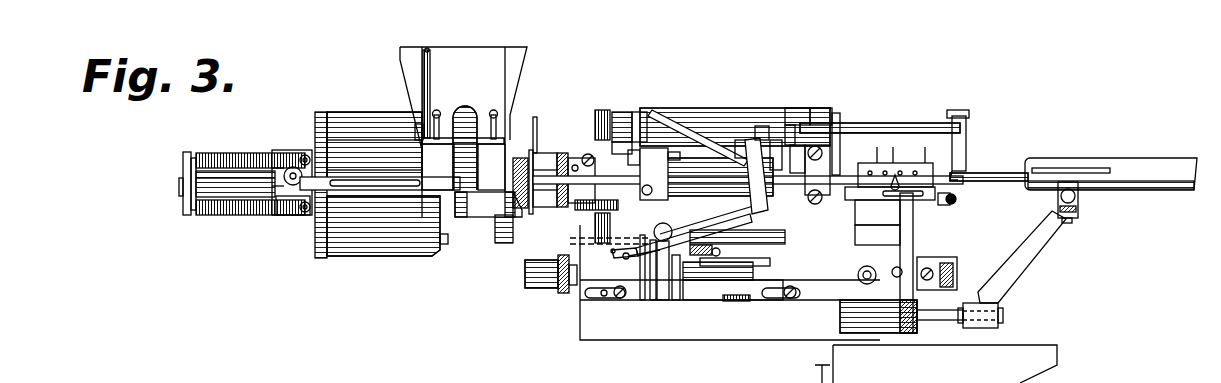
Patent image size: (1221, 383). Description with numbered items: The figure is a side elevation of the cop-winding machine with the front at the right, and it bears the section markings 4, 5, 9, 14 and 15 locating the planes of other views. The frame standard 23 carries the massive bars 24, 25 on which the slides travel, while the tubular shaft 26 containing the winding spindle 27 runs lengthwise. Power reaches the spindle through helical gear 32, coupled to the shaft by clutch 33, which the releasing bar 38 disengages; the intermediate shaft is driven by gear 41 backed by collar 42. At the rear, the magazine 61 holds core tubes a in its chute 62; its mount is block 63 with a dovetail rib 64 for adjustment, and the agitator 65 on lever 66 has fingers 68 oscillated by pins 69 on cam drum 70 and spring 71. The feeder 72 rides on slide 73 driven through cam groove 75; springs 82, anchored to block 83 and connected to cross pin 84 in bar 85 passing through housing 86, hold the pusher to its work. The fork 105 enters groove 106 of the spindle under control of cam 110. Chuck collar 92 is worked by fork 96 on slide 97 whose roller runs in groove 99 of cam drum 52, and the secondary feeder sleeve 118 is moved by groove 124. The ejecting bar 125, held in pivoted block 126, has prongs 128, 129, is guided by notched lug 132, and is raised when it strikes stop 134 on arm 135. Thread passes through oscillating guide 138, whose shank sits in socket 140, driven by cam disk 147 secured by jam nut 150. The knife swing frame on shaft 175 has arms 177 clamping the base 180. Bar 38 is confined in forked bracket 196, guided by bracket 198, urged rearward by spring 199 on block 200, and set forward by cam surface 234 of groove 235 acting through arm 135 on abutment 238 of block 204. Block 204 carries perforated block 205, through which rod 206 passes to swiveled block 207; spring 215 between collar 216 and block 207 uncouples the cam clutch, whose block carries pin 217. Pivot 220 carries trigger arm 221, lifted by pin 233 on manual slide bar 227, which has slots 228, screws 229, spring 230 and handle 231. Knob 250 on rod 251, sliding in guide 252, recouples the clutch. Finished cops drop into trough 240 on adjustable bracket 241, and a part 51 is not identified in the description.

The section line 14 is at (292, 268).
The section line 15 is at (192, 186).
The section line 5 is at (553, 150).
The section line 4 is at (702, 260).
The section line 9 is at (908, 345).
The cross pin 84 is at (188, 152).
The bar 85 is at (182, 178).
The springs 82 is at (228, 153).
The housing 86 is at (212, 215).
The block 83 is at (278, 153).
The slide 73 is at (283, 215).
The cam groove 75 is at (322, 258).
The cam drum 70 is at (338, 112).
The rod or bar 24 is at (348, 168).
The feeder 72 is at (376, 183).
The rod or bar 25 is at (382, 206).
The pins 69 is at (443, 245).
The magazine 61 is at (728, 215).
The spring 71 is at (423, 63).
The lever 66 is at (416, 128).
The fingers 68 is at (451, 116).
The agitator 65 is at (498, 138).
The core tubes a is at (457, 182).
The chute 62 is at (492, 167).
The dovetail rib 64 is at (484, 204).
The groove 106 is at (507, 218).
The cam 110 is at (516, 218).
The fork 105 is at (525, 158).
The clutch 33 is at (545, 160).
The helical gear 32 is at (563, 155).
The forked bracket 196 is at (586, 154).
The block 63 is at (515, 217).
The spring 199 is at (586, 210).
The cam surface 234 is at (600, 240).
The spring 215 is at (623, 258).
The collar 42 is at (536, 280).
The helical gear 41 is at (562, 292).
The pivot 220 is at (590, 302).
The slots 228 is at (598, 302).
The screws 229 is at (620, 302).
The pin 233 is at (642, 302).
The bent trigger arm 221 is at (652, 302).
The collar 216 is at (664, 223).
The block 207 is at (676, 302).
The pin or rod 217 is at (700, 302).
The guide 252 is at (690, 302).
The spring 230 is at (724, 302).
The bar 227 is at (768, 302).
The rod 206 is at (733, 291).
The perforated block 205 is at (740, 262).
The shaft 175 is at (758, 266).
The rod 251 is at (758, 244).
The tubular shaft 26 is at (718, 226).
The releasing bar 38 is at (678, 176).
The gear 51 is at (601, 110).
The groove 235 is at (614, 112).
The arm 135 is at (634, 112).
The stop 134 is at (628, 142).
The adjustable abutment 238 is at (636, 150).
The cam drum 52 is at (688, 108).
The groove 124 is at (704, 126).
The sleeve 118 is at (740, 140).
The block 200 is at (648, 160).
The block 126 is at (746, 110).
The block 204 is at (762, 126).
The fork 96 is at (776, 140).
The slide 97 is at (790, 125).
The groove 99 is at (797, 145).
The collar 92 is at (808, 145).
The base 180 is at (795, 108).
The forked bracket 198 is at (825, 108).
The notched lug 132 is at (838, 113).
The upright web or standard 23 is at (826, 164).
The bar 125 is at (926, 123).
The prong 128 is at (966, 125).
The forward or outer prong 129 is at (968, 152).
The mandrel or spindle 27 is at (990, 173).
The oscillative thread guide 138 is at (958, 185).
The trough 240 is at (1160, 180).
The adjustable bracket 241 is at (1028, 253).
The knob 250 is at (910, 230).
The arms 177 is at (960, 233).
The socket 140 is at (950, 242).
The disk 147 is at (945, 258).
The jam nut 150 is at (955, 272).
The handle 231 is at (915, 290).